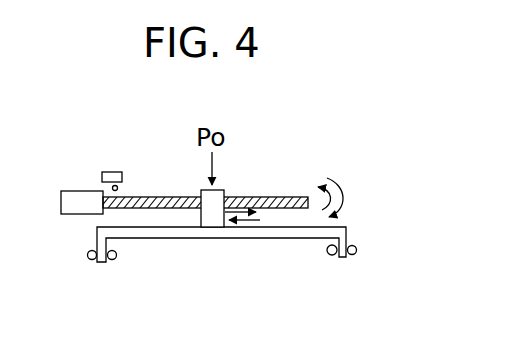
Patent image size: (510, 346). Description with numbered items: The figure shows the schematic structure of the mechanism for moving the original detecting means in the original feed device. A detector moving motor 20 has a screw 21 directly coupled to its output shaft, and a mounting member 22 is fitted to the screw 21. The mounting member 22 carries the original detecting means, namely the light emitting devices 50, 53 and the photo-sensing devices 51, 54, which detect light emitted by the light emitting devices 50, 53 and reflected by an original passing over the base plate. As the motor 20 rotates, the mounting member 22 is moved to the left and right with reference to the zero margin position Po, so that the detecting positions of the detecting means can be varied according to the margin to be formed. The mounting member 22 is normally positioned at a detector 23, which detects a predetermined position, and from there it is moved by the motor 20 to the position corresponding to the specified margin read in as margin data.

The detector moving motor 20 is at (83, 191).
The screw 21 is at (164, 189).
The mounting member 22 is at (212, 229).
The detector 23 is at (112, 170).
The light emitting device 50 is at (333, 256).
The photo-sensing device 51 is at (357, 250).
The light emitting device 53 is at (87, 255).
The photo-sensing device 54 is at (113, 260).